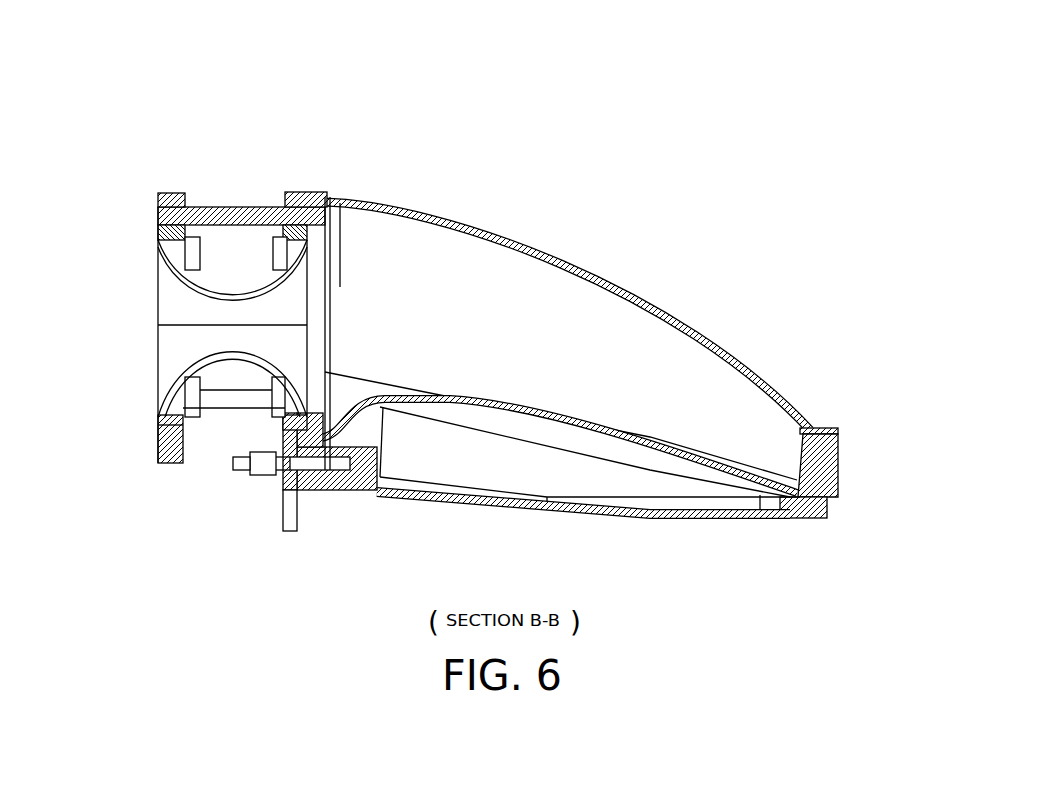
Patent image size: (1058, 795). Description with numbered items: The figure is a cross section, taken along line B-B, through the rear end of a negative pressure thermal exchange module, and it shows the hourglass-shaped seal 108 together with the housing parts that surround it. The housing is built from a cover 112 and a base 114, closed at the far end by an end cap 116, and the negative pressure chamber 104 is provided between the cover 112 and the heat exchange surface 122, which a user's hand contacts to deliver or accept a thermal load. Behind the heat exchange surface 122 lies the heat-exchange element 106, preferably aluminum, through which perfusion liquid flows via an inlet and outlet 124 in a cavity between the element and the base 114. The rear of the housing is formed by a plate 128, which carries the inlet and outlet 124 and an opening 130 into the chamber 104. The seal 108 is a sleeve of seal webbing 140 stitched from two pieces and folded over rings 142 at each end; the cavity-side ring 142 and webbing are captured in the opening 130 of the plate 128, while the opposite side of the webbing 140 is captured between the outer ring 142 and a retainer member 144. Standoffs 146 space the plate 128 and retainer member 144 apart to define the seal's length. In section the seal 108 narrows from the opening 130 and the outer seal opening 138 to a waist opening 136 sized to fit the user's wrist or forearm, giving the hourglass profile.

The negative pressure chamber 104 is at (546, 292).
The heat-exchange element 106 is at (673, 455).
The seal 108 is at (230, 272).
The cover 112 is at (672, 322).
The base 114 is at (484, 514).
The end cap 116 is at (825, 460).
The heat exchange surface 122 is at (554, 398).
The inlet and outlet 124 is at (261, 478).
The plate 128 is at (298, 515).
The opening 130 is at (313, 268).
The waist opening 136 is at (223, 309).
The seal opening 138 is at (158, 273).
The seal webbing 140 is at (270, 237).
The ring 142 is at (323, 207).
The retainer member 144 is at (165, 193).
The standoffs 146 is at (270, 207).